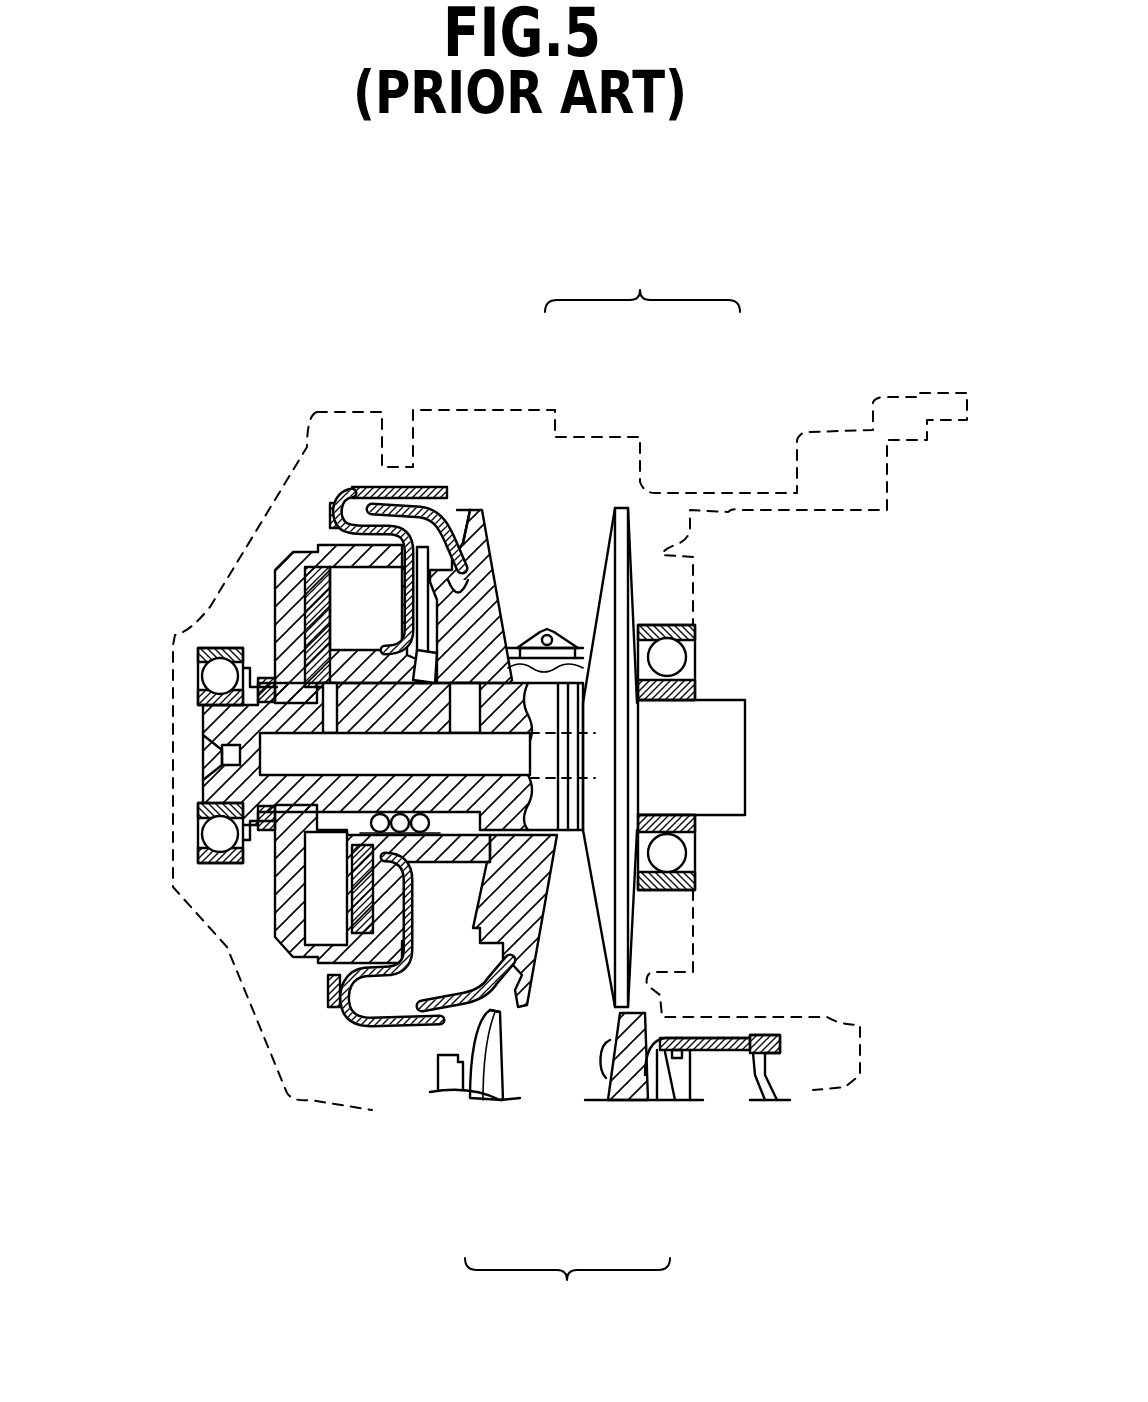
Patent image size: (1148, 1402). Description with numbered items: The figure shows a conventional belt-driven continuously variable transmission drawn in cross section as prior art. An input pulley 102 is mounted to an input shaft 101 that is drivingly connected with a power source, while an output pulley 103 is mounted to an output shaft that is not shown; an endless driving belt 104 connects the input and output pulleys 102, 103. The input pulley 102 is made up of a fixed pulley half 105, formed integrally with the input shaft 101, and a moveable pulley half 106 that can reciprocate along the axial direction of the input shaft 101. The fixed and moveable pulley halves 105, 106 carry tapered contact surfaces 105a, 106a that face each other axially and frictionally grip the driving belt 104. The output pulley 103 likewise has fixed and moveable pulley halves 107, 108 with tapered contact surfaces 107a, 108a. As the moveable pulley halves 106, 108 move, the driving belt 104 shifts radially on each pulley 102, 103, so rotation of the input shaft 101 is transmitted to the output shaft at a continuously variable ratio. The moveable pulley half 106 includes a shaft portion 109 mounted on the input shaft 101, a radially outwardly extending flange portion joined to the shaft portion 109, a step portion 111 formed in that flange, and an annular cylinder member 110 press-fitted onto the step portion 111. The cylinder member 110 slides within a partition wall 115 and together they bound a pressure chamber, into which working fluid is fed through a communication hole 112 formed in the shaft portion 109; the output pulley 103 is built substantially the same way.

The input shaft 101 is at (738, 757).
The input pulley 102 is at (642, 276).
The output pulley 103 is at (567, 1296).
The driving belt 104 is at (560, 636).
The fixed pulley half 105 is at (623, 507).
The tapered contact surface 105a is at (592, 898).
The moveable pulley half 106 is at (475, 507).
The tapered contact surface 106a is at (490, 522).
The fixed pulley half 107 is at (484, 1088).
The tapered contact surface 107a is at (505, 1058).
The moveable pulley half 108 is at (631, 1090).
The tapered contact surface 108a is at (678, 1100).
The shaft portion 109 is at (360, 652).
The cylinder member 110 is at (457, 508).
The step portion 111 is at (488, 580).
The communication hole 112 is at (430, 667).
The partition wall 115 is at (358, 495).